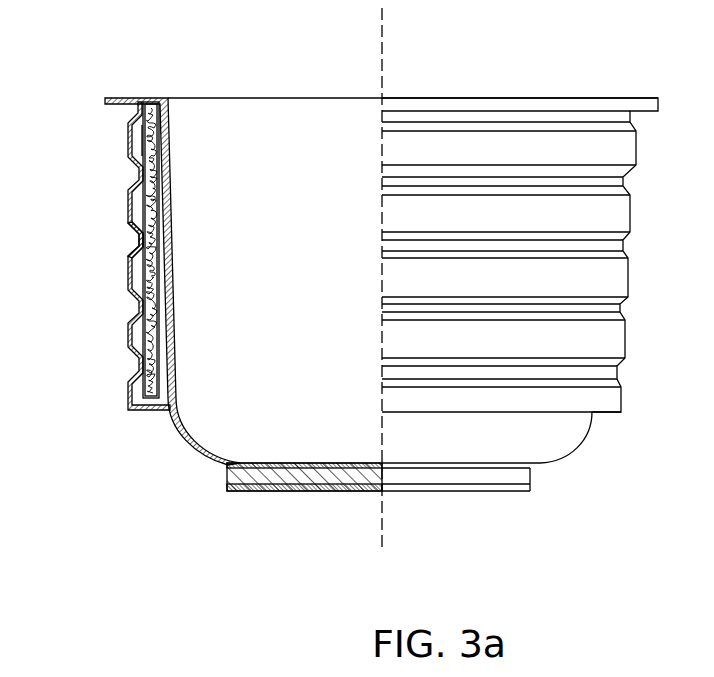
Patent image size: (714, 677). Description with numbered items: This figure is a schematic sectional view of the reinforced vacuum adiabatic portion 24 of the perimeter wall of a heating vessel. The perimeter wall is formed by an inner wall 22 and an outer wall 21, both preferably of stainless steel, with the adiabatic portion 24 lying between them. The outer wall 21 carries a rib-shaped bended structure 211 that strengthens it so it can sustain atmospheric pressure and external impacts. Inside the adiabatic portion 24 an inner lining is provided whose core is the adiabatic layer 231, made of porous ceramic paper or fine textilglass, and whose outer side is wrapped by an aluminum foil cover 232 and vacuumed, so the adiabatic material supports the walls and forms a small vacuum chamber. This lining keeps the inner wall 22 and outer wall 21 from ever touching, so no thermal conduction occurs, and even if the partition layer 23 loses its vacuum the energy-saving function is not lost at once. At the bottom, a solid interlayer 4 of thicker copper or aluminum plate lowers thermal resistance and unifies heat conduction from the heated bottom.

The solid interlayer 4 is at (495, 481).
The outer wall 21 is at (98, 256).
The rib-shaped bended structure 211 is at (137, 233).
The inner wall 22 is at (170, 106).
The partition layer 23 is at (143, 267).
The adiabatic layer 231 is at (148, 106).
The aluminum foil cover 232 is at (147, 138).
The adiabatic portion 24 is at (135, 215).